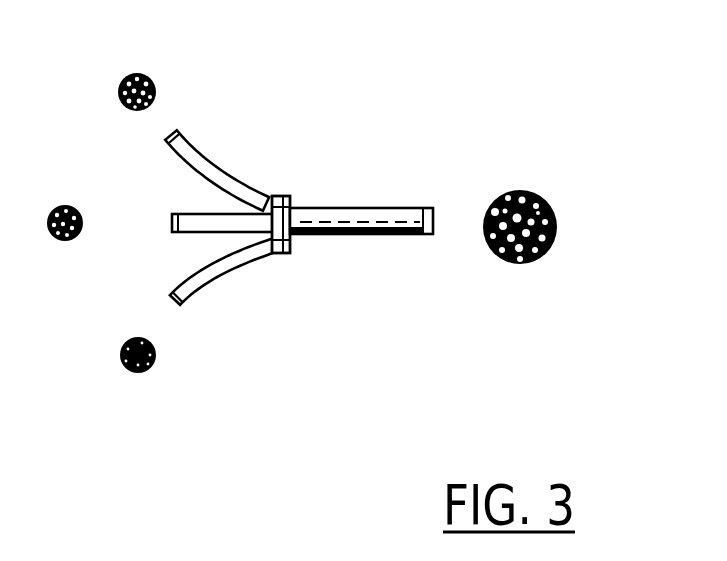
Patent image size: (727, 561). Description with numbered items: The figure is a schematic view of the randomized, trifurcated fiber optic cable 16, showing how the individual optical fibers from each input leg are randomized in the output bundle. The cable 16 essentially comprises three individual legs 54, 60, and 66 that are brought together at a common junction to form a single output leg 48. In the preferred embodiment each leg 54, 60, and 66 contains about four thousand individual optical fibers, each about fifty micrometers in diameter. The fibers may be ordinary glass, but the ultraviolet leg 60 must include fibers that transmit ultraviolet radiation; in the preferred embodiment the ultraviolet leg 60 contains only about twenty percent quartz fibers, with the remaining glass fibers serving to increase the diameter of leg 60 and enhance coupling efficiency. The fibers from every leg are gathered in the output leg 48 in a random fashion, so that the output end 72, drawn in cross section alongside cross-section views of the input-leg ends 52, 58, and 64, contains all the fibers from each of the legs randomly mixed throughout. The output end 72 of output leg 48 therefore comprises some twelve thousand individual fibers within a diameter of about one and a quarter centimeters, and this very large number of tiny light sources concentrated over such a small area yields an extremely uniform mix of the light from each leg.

The randomized trifurcated fiber optic cable 16 is at (348, 68).
The output leg 48 is at (338, 208).
The end 52 is at (158, 357).
The leg 54 is at (196, 291).
The end 58 is at (155, 86).
The ultraviolet leg 60 is at (215, 162).
The end 64 is at (172, 212).
The leg 66 is at (203, 234).
The output end 72 is at (542, 193).